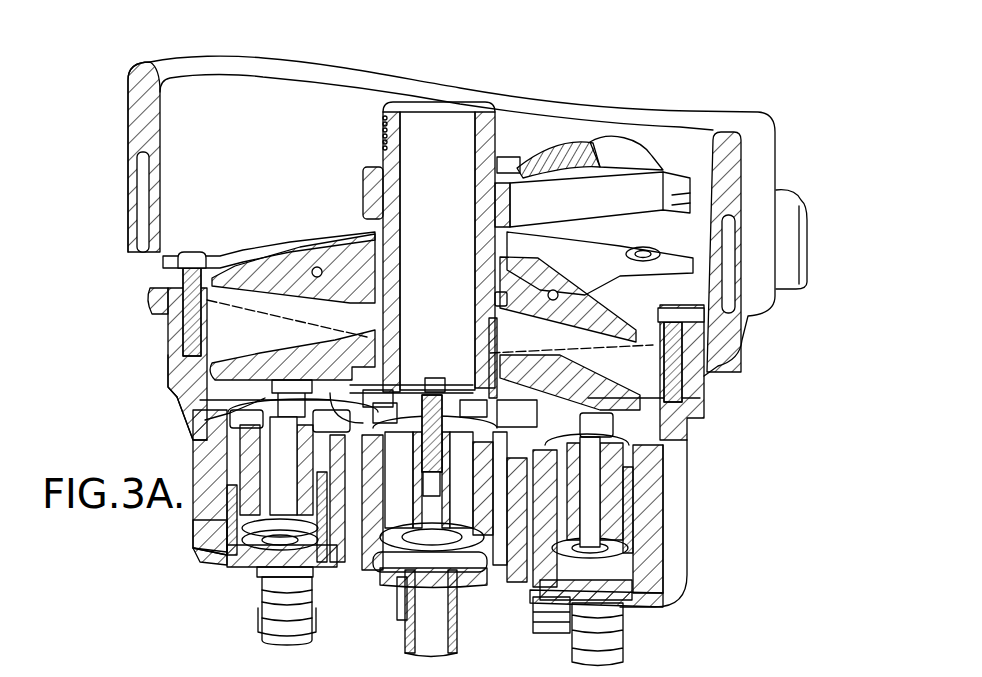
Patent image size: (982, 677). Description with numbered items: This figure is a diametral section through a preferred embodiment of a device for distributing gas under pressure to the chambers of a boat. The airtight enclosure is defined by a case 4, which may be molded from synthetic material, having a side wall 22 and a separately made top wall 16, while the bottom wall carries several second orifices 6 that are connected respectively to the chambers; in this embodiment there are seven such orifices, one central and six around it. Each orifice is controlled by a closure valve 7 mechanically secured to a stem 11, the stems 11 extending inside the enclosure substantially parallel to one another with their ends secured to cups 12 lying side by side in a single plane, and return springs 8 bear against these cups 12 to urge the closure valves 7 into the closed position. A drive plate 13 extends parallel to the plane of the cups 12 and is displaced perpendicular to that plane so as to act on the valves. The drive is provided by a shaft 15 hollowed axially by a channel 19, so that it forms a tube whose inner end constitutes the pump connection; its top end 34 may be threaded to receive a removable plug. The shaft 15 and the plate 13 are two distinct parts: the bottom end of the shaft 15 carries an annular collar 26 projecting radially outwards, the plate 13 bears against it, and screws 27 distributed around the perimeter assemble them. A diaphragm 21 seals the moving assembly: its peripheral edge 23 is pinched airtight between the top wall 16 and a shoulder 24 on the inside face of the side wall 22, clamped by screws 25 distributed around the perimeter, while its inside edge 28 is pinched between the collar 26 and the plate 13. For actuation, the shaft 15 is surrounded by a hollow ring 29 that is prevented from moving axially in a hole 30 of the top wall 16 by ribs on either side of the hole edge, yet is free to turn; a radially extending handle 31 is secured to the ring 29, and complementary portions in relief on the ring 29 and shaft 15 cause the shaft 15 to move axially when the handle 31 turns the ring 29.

The case 4 is at (694, 534).
The second orifices 6 is at (200, 547).
The closure valves 7 is at (388, 582).
The springs 8 is at (230, 413).
The stems 11 is at (607, 453).
The cups 12 is at (613, 420).
The drive plate 13 is at (700, 398).
The shaft 15 is at (458, 108).
The top wall 16 is at (243, 258).
The channel 19 is at (440, 150).
The diaphragm 21 is at (187, 360).
The side wall 22 is at (187, 380).
The peripheral edge 23 is at (167, 292).
The shoulder 24 is at (160, 300).
The screws 25 is at (175, 290).
The annular collar 26 is at (480, 300).
The screws 27 is at (488, 352).
The inside edge 28 is at (690, 357).
The ring 29 is at (365, 182).
The hole 30 is at (345, 237).
The handle 31 is at (563, 150).
The top end 34 is at (392, 127).